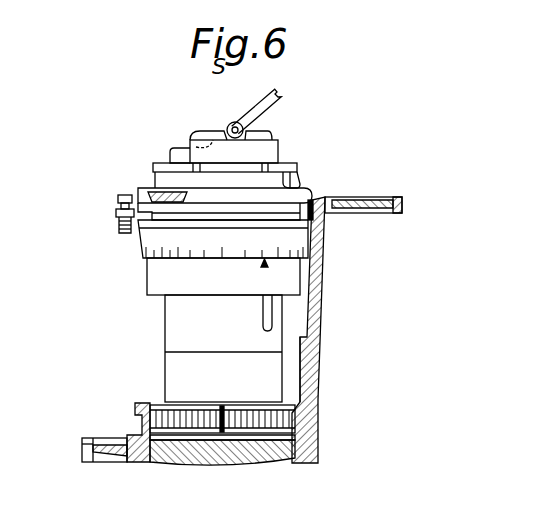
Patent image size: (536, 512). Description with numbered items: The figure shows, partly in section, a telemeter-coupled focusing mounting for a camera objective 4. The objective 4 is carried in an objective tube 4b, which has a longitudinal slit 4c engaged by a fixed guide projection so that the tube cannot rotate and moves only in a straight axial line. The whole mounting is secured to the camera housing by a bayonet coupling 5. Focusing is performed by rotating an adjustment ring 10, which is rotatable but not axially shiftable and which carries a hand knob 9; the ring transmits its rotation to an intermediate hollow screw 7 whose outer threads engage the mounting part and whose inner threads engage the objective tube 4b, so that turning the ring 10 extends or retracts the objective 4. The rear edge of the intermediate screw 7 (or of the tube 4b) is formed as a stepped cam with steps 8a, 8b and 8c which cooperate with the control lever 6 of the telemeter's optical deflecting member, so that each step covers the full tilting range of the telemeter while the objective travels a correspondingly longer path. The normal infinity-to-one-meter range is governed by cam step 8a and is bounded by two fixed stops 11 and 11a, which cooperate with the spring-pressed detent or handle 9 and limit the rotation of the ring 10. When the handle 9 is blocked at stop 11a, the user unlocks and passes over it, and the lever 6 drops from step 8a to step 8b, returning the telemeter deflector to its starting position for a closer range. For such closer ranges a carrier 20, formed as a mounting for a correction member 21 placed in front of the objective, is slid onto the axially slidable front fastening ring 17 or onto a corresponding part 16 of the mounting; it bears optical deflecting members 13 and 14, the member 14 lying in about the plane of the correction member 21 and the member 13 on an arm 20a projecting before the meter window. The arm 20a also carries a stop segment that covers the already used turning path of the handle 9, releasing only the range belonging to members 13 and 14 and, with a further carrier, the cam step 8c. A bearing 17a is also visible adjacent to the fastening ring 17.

The objective 4 is at (255, 393).
The objective tube 4b is at (185, 330).
The longitudinal slit 4c is at (263, 318).
The bayonet coupling 5 is at (297, 182).
The control lever 6 is at (253, 110).
The intermediate hollow screw 7 is at (276, 150).
The cam step 8a is at (175, 150).
The cam step 8b is at (203, 133).
The cam step 8c is at (268, 130).
The hand knob 9 is at (118, 220).
The adjustment ring 10 is at (309, 218).
The fixed stop 11 is at (303, 183).
The fixed stop 11a is at (143, 186).
The optical deflection member 13 is at (365, 208).
The optical deflecting member 14 is at (118, 453).
The part of the objective mounting 16 is at (190, 192).
The front fastening ring 17 is at (190, 410).
The bearing cage 17a is at (218, 410).
The carrier 20 is at (145, 430).
The arm 20a is at (320, 317).
The correction member 21 is at (230, 457).